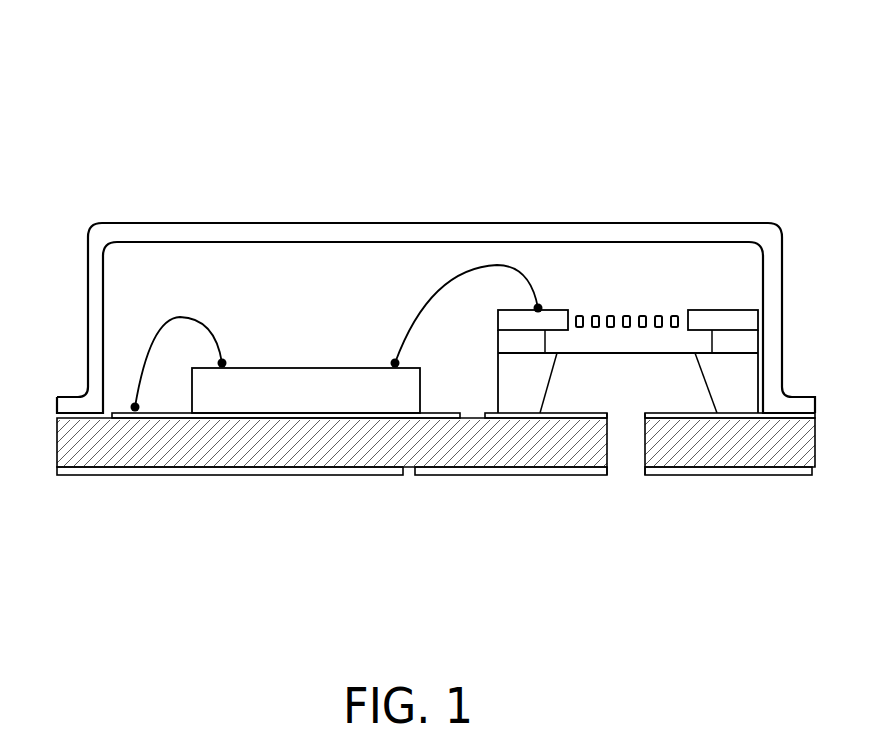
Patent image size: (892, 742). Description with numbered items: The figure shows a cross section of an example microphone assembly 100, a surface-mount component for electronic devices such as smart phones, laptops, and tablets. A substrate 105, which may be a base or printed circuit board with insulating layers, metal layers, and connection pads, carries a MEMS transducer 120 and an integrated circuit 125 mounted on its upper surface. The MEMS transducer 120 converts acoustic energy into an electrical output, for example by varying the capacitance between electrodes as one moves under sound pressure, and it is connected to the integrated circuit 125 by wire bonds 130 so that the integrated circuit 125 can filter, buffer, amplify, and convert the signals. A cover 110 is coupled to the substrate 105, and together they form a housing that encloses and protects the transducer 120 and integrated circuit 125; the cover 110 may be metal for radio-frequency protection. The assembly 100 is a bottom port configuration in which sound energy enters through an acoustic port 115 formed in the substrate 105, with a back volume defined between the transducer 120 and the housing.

The microphone assembly 100 is at (370, 106).
The substrate 105 is at (294, 452).
The cover 110 is at (147, 218).
The acoustic port 115 is at (628, 482).
The MEMS transducer 120 is at (696, 310).
The integrated circuit 125 is at (288, 366).
The wire bonds 130 is at (456, 276).